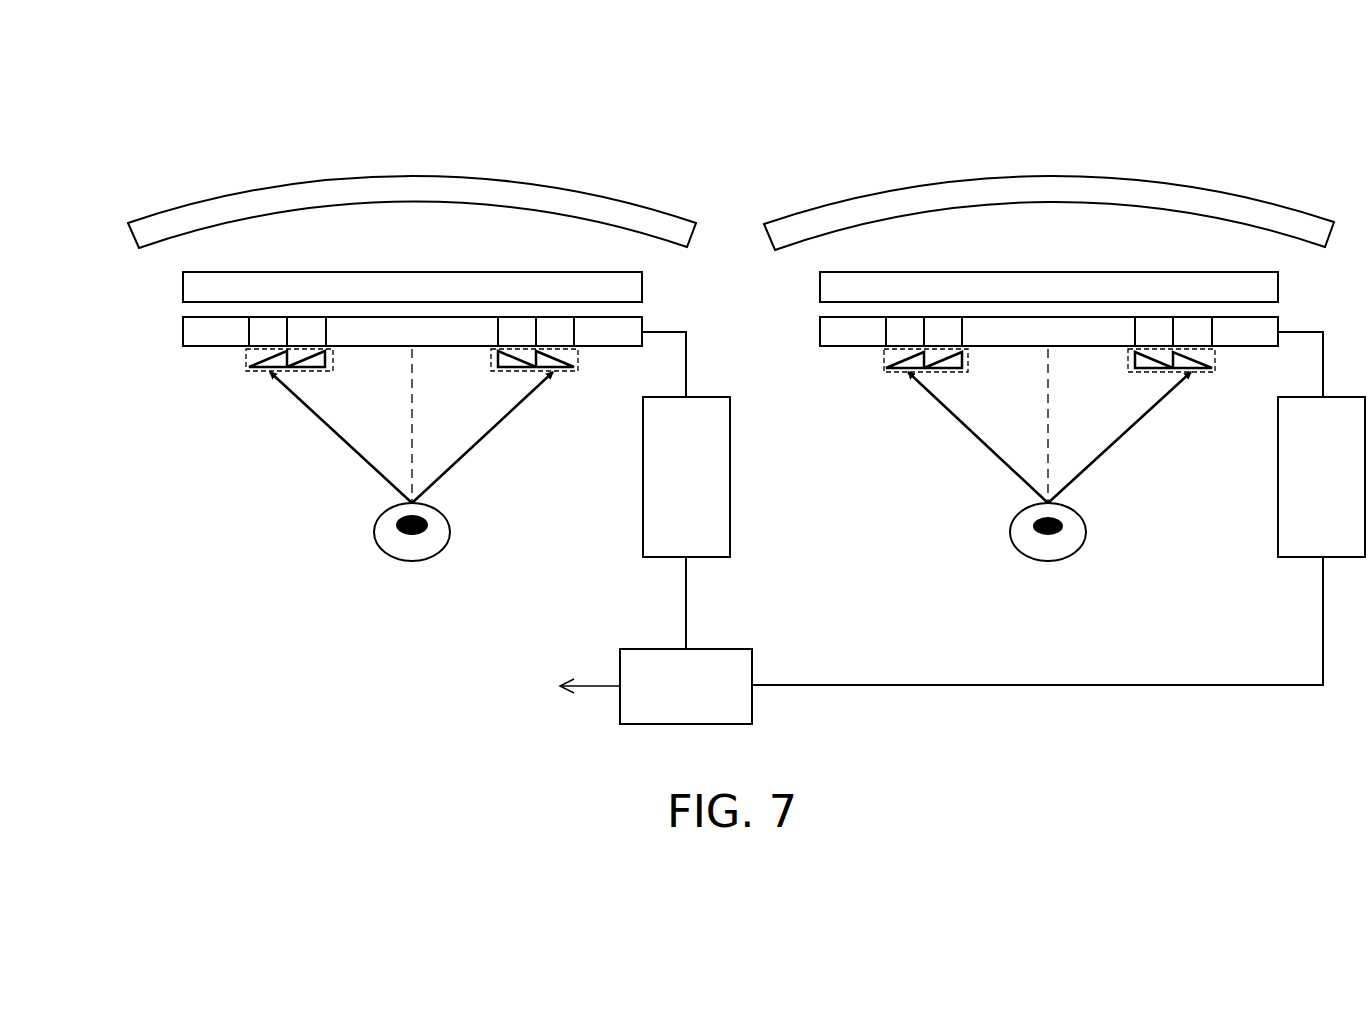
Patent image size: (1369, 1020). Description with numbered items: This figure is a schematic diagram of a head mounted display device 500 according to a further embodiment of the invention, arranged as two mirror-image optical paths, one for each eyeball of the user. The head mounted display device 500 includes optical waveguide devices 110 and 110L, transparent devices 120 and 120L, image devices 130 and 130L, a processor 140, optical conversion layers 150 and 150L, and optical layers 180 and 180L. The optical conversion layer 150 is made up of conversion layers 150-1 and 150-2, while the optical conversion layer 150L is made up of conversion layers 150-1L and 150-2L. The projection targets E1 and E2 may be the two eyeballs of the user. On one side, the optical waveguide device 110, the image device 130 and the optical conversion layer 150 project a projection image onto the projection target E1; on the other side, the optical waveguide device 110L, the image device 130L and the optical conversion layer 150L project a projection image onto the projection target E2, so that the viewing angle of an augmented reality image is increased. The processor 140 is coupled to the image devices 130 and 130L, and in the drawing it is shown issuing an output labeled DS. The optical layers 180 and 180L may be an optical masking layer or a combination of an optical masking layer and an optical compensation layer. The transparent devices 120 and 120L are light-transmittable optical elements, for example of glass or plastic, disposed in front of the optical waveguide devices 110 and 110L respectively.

The head mounted display device 500 is at (734, 450).
The transparent device 120L is at (401, 176).
The transparent device 120 is at (1040, 176).
The optical layer 180L is at (412, 272).
The optical layer 180 is at (1050, 272).
The optical waveguide device 110L is at (186, 335).
The optical waveguide device 110 is at (824, 335).
The optical conversion layer 150L is at (360, 572).
The optical conversion layer 150 is at (700, 524).
The conversion layer 150-1L is at (265, 373).
The conversion layer 150-2L is at (560, 375).
The conversion layer 150-1 is at (903, 373).
The conversion layer 150-2 is at (1196, 375).
The image device 130L is at (730, 497).
The image device 130 is at (1278, 522).
The processor 140 is at (685, 724).
The projection target E2 is at (382, 548).
The projection target E1 is at (1025, 545).
The detection signal output DS is at (570, 690).